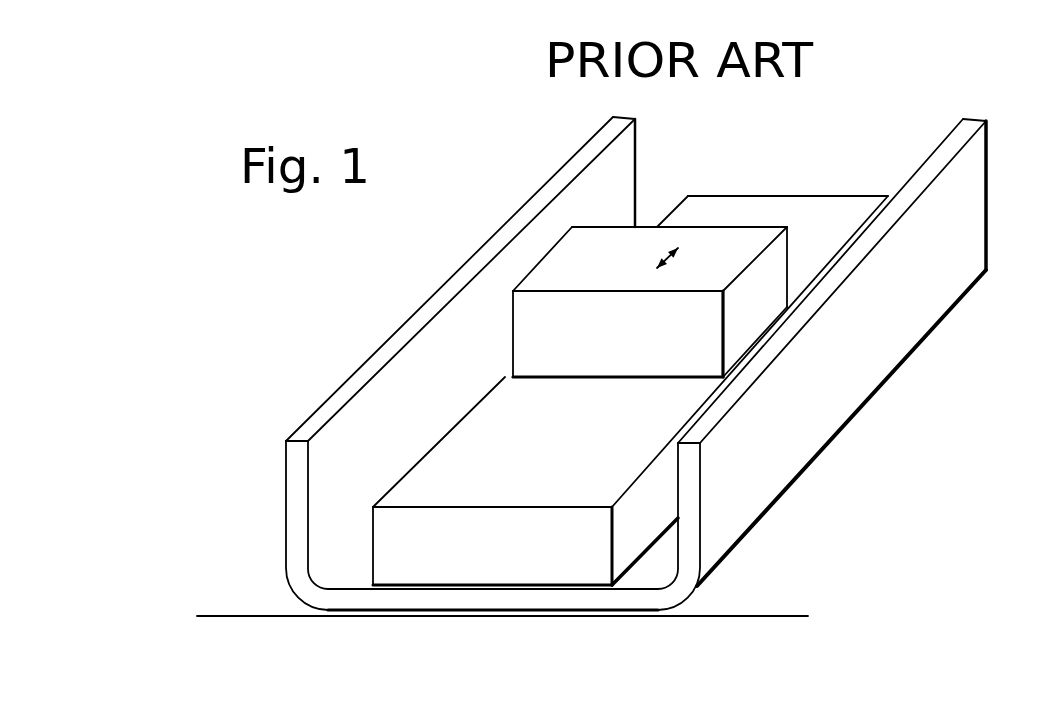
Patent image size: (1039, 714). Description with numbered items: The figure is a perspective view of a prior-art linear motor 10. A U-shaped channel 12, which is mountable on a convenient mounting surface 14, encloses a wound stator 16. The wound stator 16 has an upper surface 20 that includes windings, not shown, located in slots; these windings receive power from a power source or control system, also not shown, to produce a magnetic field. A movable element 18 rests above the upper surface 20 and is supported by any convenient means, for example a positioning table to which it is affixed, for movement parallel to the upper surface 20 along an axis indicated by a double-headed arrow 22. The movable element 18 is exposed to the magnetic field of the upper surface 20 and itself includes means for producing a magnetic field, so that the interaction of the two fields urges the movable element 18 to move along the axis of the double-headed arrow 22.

The linear motor 10 is at (200, 312).
The U-shaped channel 12 is at (967, 188).
The mounting surface 14 is at (755, 615).
The wound stator 16 is at (582, 550).
The movable element 18 is at (745, 250).
The upper surface 20 is at (480, 460).
The double-headed arrow 22 is at (658, 260).